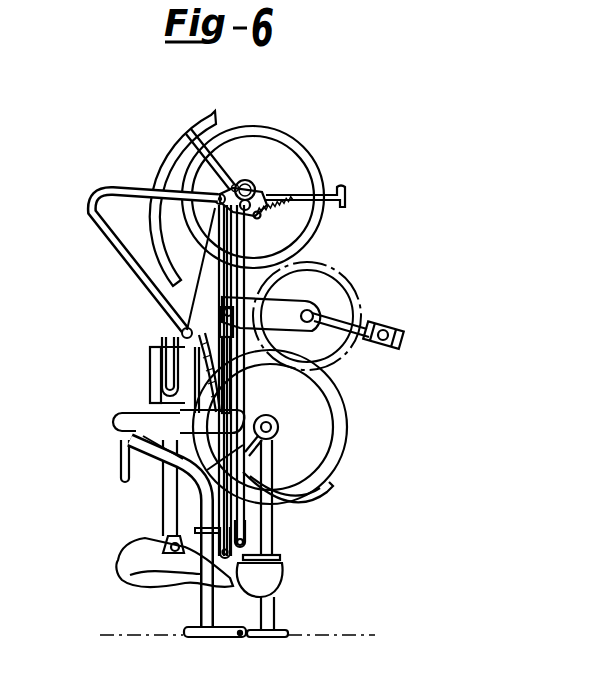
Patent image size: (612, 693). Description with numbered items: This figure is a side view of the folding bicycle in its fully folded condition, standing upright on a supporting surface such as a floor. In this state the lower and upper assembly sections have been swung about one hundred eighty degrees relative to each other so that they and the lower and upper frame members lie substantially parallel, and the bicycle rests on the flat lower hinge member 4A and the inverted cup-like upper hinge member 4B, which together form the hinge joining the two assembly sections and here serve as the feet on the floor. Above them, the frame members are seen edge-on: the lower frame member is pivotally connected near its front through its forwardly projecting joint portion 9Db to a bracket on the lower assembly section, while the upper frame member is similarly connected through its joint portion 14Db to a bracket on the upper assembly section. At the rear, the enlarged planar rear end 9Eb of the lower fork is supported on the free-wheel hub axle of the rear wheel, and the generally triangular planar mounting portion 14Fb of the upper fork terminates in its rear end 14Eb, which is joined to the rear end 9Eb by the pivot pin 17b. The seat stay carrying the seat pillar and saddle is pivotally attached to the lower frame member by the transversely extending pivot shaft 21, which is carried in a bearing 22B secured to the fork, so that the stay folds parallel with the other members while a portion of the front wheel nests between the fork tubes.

The pivot pin 17b is at (216, 196).
The rear end of fork 9Eb is at (250, 188).
The rear end of fork 14Eb is at (262, 219).
The planar mounting portion 14Fb is at (210, 247).
The pivot shaft 21 is at (218, 313).
The bearing 22B is at (222, 308).
The joint portion 14Db is at (223, 545).
The joint portion 9Db is at (247, 540).
The upper hinge member 4B is at (184, 631).
The lower hinge member 4A is at (288, 633).